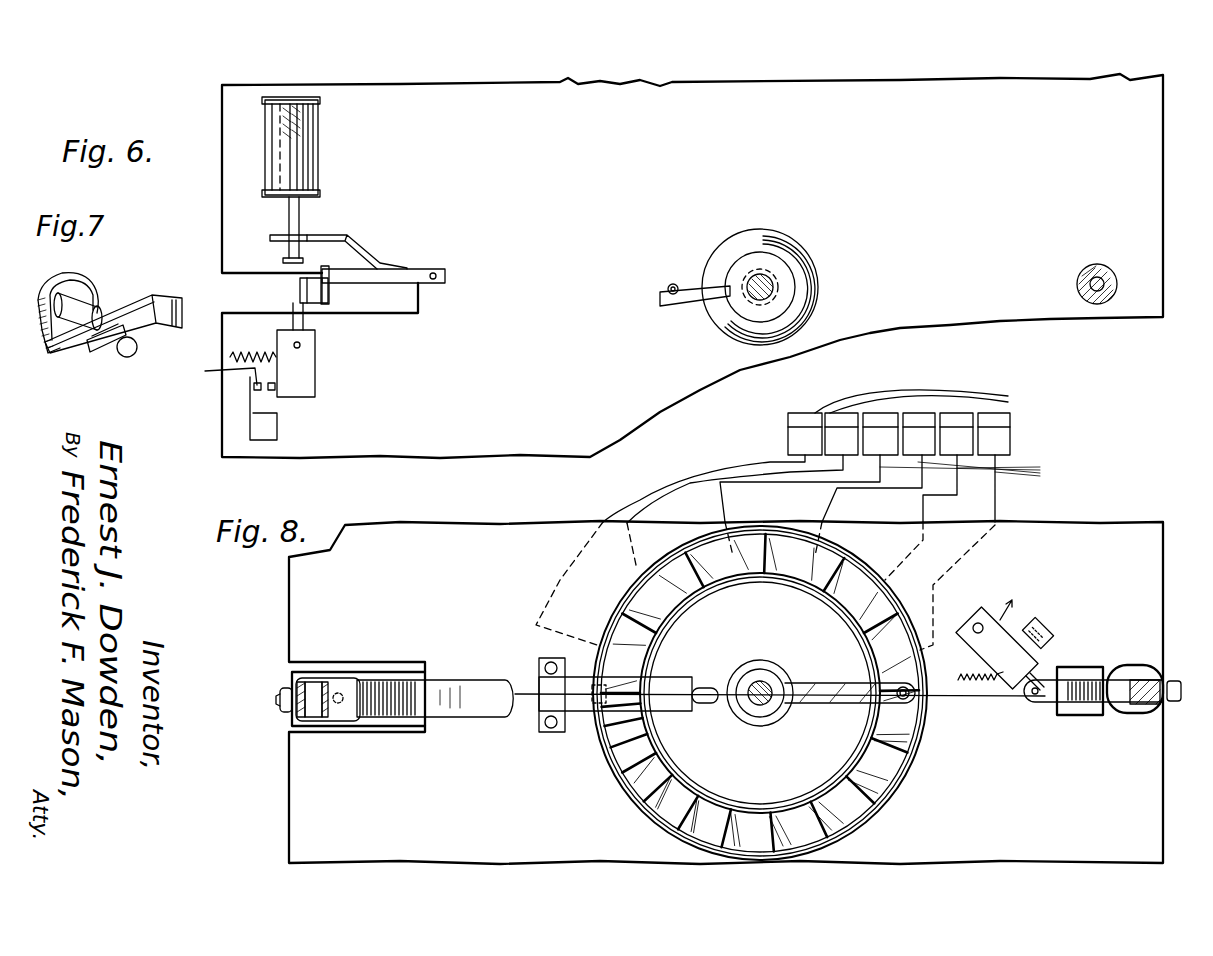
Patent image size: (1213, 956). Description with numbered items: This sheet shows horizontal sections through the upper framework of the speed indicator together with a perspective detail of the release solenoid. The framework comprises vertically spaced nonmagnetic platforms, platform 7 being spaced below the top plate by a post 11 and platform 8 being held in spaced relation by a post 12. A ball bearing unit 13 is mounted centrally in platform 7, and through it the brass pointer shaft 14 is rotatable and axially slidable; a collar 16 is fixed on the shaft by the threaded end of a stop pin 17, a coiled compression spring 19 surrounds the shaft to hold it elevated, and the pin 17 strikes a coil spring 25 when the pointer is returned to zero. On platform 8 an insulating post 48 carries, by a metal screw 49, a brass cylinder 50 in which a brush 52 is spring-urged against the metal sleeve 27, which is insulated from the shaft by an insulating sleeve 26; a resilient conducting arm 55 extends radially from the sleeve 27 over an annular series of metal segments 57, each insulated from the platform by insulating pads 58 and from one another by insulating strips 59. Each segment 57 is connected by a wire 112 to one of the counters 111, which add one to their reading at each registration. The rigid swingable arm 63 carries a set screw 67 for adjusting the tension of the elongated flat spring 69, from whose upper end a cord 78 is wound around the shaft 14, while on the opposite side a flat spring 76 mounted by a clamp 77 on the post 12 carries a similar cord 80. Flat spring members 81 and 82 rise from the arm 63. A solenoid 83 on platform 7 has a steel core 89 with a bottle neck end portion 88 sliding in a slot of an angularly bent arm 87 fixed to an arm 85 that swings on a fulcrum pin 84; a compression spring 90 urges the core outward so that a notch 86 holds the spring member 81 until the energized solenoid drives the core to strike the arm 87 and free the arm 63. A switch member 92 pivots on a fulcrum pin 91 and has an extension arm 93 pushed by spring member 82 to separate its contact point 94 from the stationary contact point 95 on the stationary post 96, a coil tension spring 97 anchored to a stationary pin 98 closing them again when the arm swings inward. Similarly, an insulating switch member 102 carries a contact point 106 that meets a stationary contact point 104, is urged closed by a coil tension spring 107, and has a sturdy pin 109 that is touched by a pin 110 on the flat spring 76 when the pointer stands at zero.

In FIG. 6, the platform 7 is at (502, 452).
In FIG. 8, the platform 8 is at (283, 799).
In FIG. 6, the post 11 is at (1093, 270).
In FIG. 8, the post 12 is at (1146, 712).
In FIG. 6, the ball bearing unit 13 is at (790, 248).
In FIG. 6, the pointer shaft 14 is at (776, 282).
In FIG. 8, the pointer shaft 14 is at (753, 684).
In FIG. 6, the collar 16 is at (748, 256).
In FIG. 6, the stop pin 17 is at (693, 306).
In FIG. 6, the coiled compression spring 19 is at (740, 272).
In FIG. 6, the coil spring 25 is at (673, 283).
In FIG. 8, the insulating sleeve 26 is at (767, 670).
In FIG. 8, the metal sleeve 27 is at (786, 676).
In FIG. 8, the post 48 is at (543, 735).
In FIG. 8, the metal screw 49 is at (535, 693).
In FIG. 8, the brass cylinder 50 is at (676, 690).
In FIG. 8, the brush 52 is at (703, 690).
In FIG. 8, the arm 55 is at (850, 717).
In FIG. 8, the metal segments 57 is at (905, 762).
In FIG. 8, the insulating pads 58 is at (765, 578).
In FIG. 8, the insulating strips 59 is at (645, 786).
In FIG. 6, the swingable arm 63 is at (312, 306).
In FIG. 8, the swingable arm 63 is at (313, 700).
In FIG. 8, the set screw 67 is at (279, 702).
In FIG. 8, the flat spring 69 is at (474, 680).
In FIG. 8, the flat spring 76 is at (1086, 715).
In FIG. 8, the clamp 77 is at (1122, 710).
In FIG. 8, the cord 78 is at (535, 706).
In FIG. 8, the cord 80 is at (988, 696).
In FIG. 6, the flat spring member 81 is at (328, 295).
In FIG. 8, the flat spring member 81 is at (337, 690).
In FIG. 6, the flat spring member 82 is at (300, 285).
In FIG. 8, the flat spring member 82 is at (292, 680).
In FIG. 6, the solenoid 83 is at (320, 134).
In FIG. 7, the solenoid 83 is at (68, 299).
In FIG. 6, the fulcrum pin 84 is at (441, 270).
In FIG. 6, the arm 85 is at (412, 278).
In FIG. 6, the notch 86 is at (338, 262).
In FIG. 6, the angularly bent arm 87 is at (346, 236).
In FIG. 7, the angularly bent arm 87 is at (138, 300).
In FIG. 6, the bottle neck end portion 88 is at (267, 249).
In FIG. 7, the bottle neck end portion 88 is at (110, 352).
In FIG. 6, the core 89 is at (287, 208).
In FIG. 7, the core 89 is at (97, 307).
In FIG. 6, the compression spring 90 is at (278, 130).
In FIG. 6, the fulcrum pin 91 is at (302, 346).
In FIG. 6, the switch member 92 is at (305, 372).
In FIG. 6, the extension arm 93 is at (293, 304).
In FIG. 6, the contact point 94 is at (272, 392).
In FIG. 6, the stationary contact point 95 is at (220, 375).
In FIG. 6, the stationary post 96 is at (272, 424).
In FIG. 6, the coil tension spring 97 is at (243, 328).
In FIG. 6, the stationary pin 98 is at (230, 357).
In FIG. 8, the switch member 102 is at (1020, 622).
In FIG. 8, the stationary contact point 104 is at (1058, 648).
In FIG. 8, the contact point 106 is at (1055, 630).
In FIG. 8, the coil tension spring 107 is at (957, 678).
In FIG. 8, the pin 109 is at (1036, 676).
In FIG. 8, the pin 110 is at (1038, 700).
In FIG. 8, the counters 111 is at (1006, 399).
In FIG. 8, the wire 112 is at (805, 552).